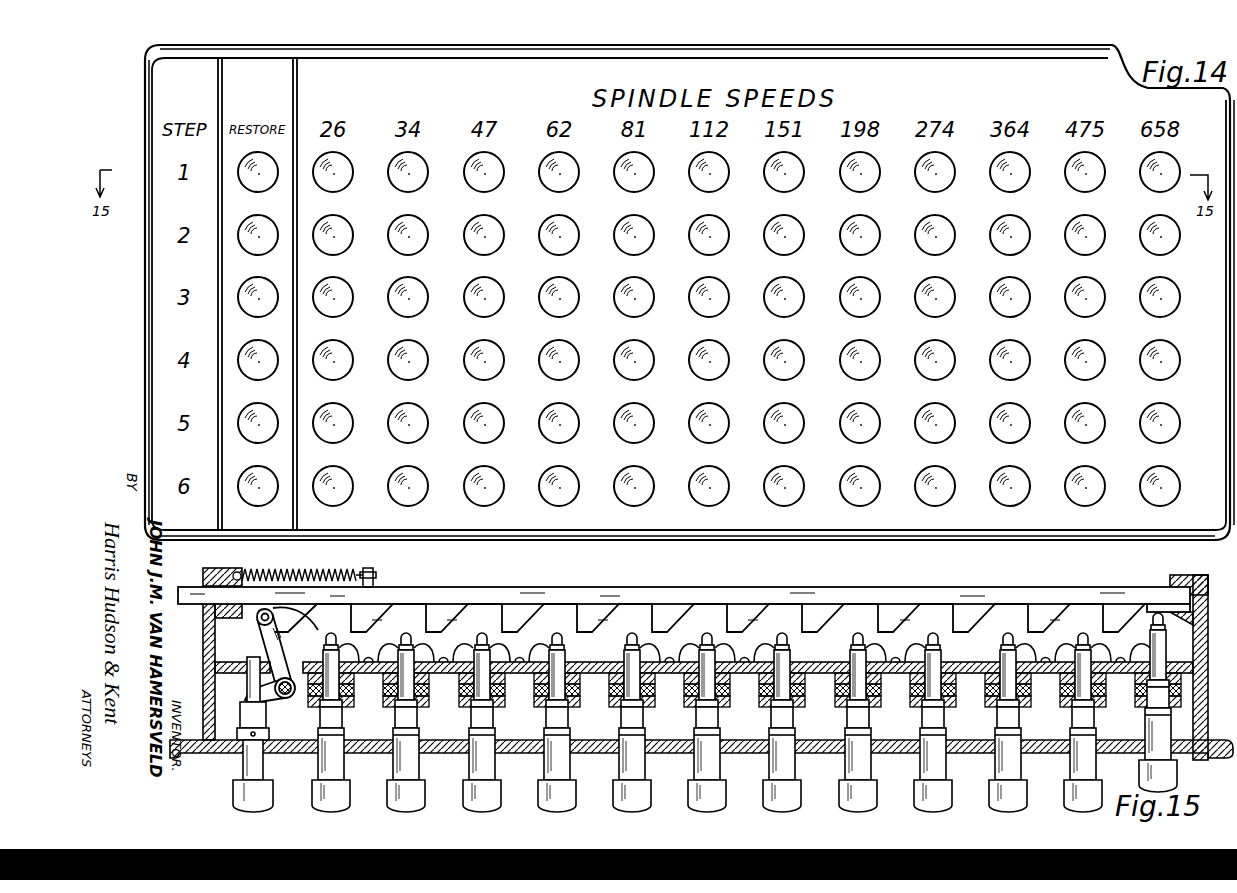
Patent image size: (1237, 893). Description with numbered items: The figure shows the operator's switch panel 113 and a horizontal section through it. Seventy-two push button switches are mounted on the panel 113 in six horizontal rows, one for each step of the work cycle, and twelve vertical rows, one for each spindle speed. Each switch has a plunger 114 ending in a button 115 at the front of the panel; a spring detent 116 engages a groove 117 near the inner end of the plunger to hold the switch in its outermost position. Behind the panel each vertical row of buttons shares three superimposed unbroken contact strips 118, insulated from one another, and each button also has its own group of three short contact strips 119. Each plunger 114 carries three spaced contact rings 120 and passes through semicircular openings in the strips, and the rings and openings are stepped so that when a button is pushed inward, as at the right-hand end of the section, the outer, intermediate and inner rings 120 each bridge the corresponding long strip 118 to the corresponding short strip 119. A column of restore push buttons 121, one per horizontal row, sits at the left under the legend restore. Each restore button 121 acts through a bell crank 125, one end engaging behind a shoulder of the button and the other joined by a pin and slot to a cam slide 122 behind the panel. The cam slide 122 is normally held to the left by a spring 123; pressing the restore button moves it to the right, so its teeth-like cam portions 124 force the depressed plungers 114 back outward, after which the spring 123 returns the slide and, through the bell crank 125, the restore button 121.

In FIG. 14, the switch panel 113 is at (149, 88).
In FIG. 15, the switch panel 113 is at (1030, 757).
In FIG. 15, the plunger 114 is at (1146, 731).
In FIG. 14, the button 115 is at (1150, 178).
In FIG. 15, the button 115 is at (344, 796).
In FIG. 15, the spring detent 116 is at (652, 658).
In FIG. 15, the groove 117 is at (626, 645).
In FIG. 15, the unbroken contact strip 118 is at (532, 680).
In FIG. 15, the short contact strip 119 is at (582, 690).
In FIG. 15, the contact ring 120 is at (643, 713).
In FIG. 14, the restore push button 121 is at (250, 178).
In FIG. 15, the restore push button 121 is at (236, 790).
In FIG. 15, the cam slide 122 is at (606, 593).
In FIG. 15, the spring 123 is at (300, 574).
In FIG. 15, the cam portion 124 is at (670, 633).
In FIG. 15, the bell crank 125 is at (287, 641).